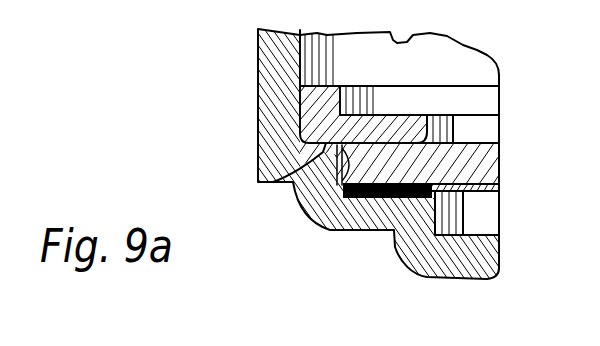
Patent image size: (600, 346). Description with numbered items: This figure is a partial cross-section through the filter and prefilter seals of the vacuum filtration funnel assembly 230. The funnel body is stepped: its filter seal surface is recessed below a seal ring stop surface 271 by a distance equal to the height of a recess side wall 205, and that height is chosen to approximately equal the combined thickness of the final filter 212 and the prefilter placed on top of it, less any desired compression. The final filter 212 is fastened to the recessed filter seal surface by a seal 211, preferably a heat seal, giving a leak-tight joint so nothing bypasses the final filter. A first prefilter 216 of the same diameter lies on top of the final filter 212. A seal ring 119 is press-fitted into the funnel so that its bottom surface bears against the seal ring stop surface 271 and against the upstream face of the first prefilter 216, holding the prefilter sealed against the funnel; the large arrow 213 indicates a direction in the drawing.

The seal assembly 230 is at (200, 63).
The retainer block 119 is at (312, 126).
The interface boundary 271 is at (273, 182).
The spring element 205 is at (330, 182).
The seal element 211 is at (381, 198).
The body member 216 is at (498, 165).
The seal ring 212 is at (498, 194).
The flow direction 213 is at (447, 246).